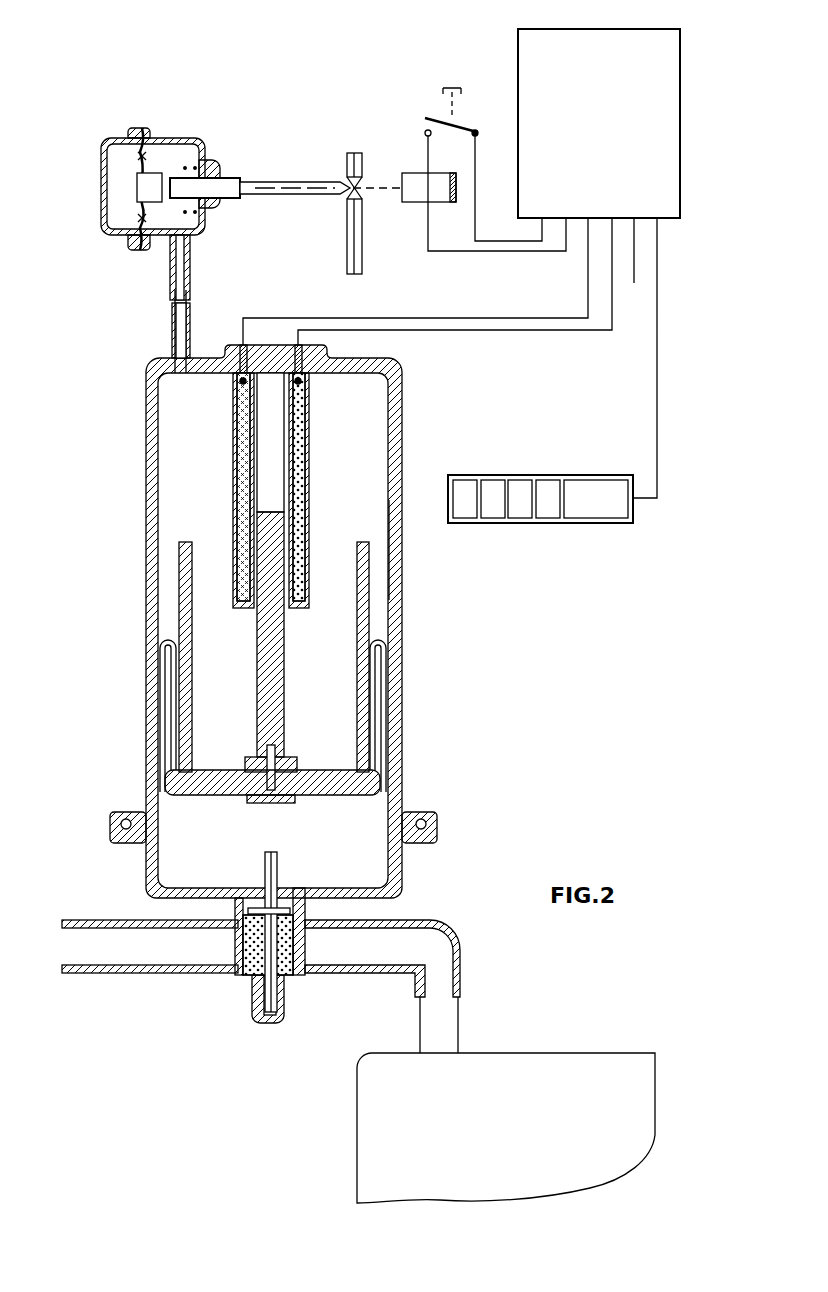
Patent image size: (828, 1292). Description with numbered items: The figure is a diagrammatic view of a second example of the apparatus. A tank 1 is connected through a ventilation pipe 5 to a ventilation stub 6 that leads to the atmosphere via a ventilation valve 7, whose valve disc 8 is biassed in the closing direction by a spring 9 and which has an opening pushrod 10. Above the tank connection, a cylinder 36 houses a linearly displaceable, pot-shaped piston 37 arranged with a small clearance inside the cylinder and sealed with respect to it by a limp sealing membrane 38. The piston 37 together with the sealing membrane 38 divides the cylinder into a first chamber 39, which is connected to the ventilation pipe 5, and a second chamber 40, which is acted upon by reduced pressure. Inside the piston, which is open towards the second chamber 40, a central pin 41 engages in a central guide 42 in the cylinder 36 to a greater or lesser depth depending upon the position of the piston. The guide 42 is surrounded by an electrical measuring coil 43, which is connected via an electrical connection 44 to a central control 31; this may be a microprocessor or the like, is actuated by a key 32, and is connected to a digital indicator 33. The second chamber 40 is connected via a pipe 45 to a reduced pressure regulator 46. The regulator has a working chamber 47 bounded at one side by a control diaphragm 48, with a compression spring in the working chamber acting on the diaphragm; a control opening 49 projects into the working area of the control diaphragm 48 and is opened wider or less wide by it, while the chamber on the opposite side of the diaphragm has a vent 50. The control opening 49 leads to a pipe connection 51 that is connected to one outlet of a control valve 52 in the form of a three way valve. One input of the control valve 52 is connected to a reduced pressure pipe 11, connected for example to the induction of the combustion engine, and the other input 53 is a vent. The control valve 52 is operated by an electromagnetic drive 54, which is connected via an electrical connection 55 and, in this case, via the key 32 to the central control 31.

The tank 1 is at (565, 1080).
The ventilation pipe 5 is at (445, 1025).
The ventilation stub 6 is at (92, 955).
The ventilation valve 7 is at (237, 1003).
The valve disc 8 is at (240, 905).
The spring 9 is at (285, 945).
The opening pushrod 10 is at (272, 867).
The reduced pressure pipe 11 is at (362, 255).
The central control 31 is at (606, 138).
The key 32 is at (450, 105).
The digital indicator 33 is at (594, 505).
The cylinder 36 is at (395, 542).
The piston 37 is at (362, 577).
The sealing membrane 38 is at (398, 645).
The first chamber 39 is at (200, 838).
The second chamber 40 is at (185, 433).
The central pin 41 is at (272, 650).
The central guide 42 is at (243, 517).
The electrical measuring coil 43 is at (243, 468).
The electrical connection 44 is at (468, 318).
The pipe 45 is at (173, 297).
The reduced pressure regulator 46 is at (218, 128).
The working chamber 47 is at (190, 153).
The control diaphragm 48 is at (140, 230).
The control opening 49 is at (168, 180).
The vent 50 is at (104, 168).
The pipe connection 51 is at (223, 190).
The control valve 52 is at (360, 133).
The vent input 53 is at (353, 158).
The electromagnetic drive 54 is at (440, 173).
The electrical connection 55 is at (525, 252).